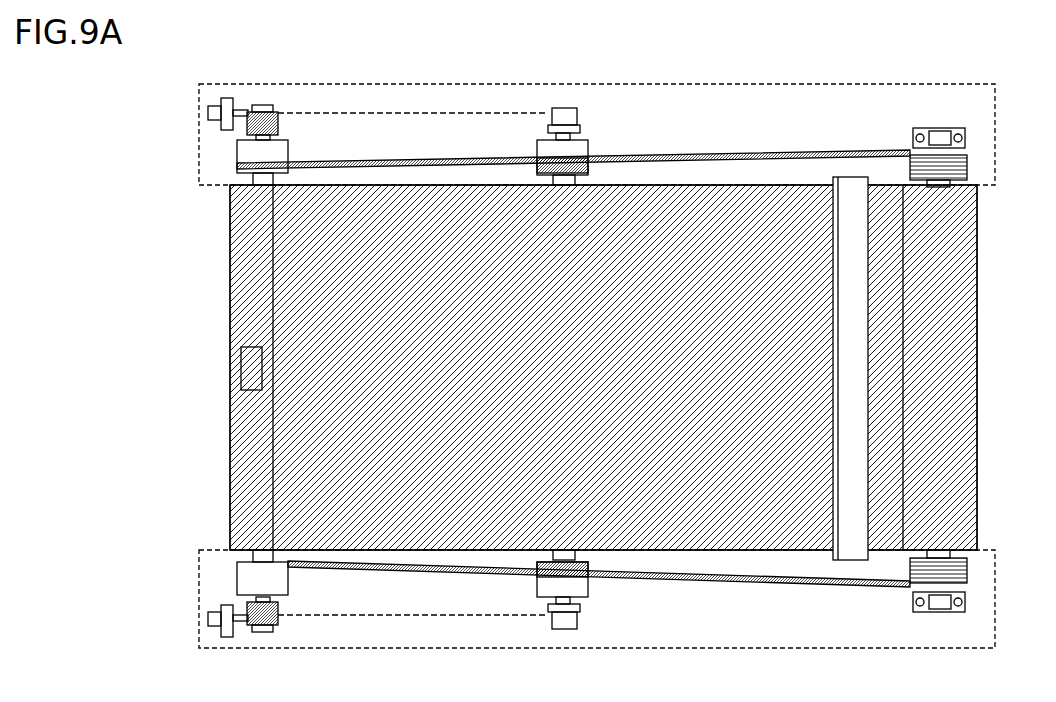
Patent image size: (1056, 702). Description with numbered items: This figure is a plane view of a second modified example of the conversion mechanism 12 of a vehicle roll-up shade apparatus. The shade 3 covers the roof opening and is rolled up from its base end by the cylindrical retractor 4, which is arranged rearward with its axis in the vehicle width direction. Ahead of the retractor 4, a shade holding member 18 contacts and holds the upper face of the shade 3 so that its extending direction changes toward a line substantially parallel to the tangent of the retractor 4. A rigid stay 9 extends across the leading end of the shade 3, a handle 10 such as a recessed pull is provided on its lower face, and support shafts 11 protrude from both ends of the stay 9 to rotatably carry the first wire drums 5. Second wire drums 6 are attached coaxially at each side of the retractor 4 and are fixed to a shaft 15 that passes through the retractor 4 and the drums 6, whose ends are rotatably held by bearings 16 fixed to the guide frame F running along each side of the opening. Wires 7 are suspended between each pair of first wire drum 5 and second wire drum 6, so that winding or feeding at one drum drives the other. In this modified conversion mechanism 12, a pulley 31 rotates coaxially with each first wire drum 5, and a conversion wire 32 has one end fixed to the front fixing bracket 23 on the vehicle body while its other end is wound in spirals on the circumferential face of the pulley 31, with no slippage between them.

The shade 3 is at (765, 198).
The retractor 4 is at (977, 305).
The first wire drum 5 is at (250, 153).
The second wire drum 6 is at (966, 152).
The wire 7 is at (645, 157).
The stay 9 is at (230, 333).
The handle 10 is at (241, 365).
The support shaft 11 is at (248, 181).
The conversion mechanism 12 is at (397, 359).
The shaft 15 is at (952, 553).
The bearing 16 is at (942, 130).
The shade holding member 18 is at (852, 177).
The fixing bracket 23 is at (226, 98).
The pulley 31 is at (275, 104).
The conversion wire 32 is at (273, 362).
The guide frame F is at (455, 84).